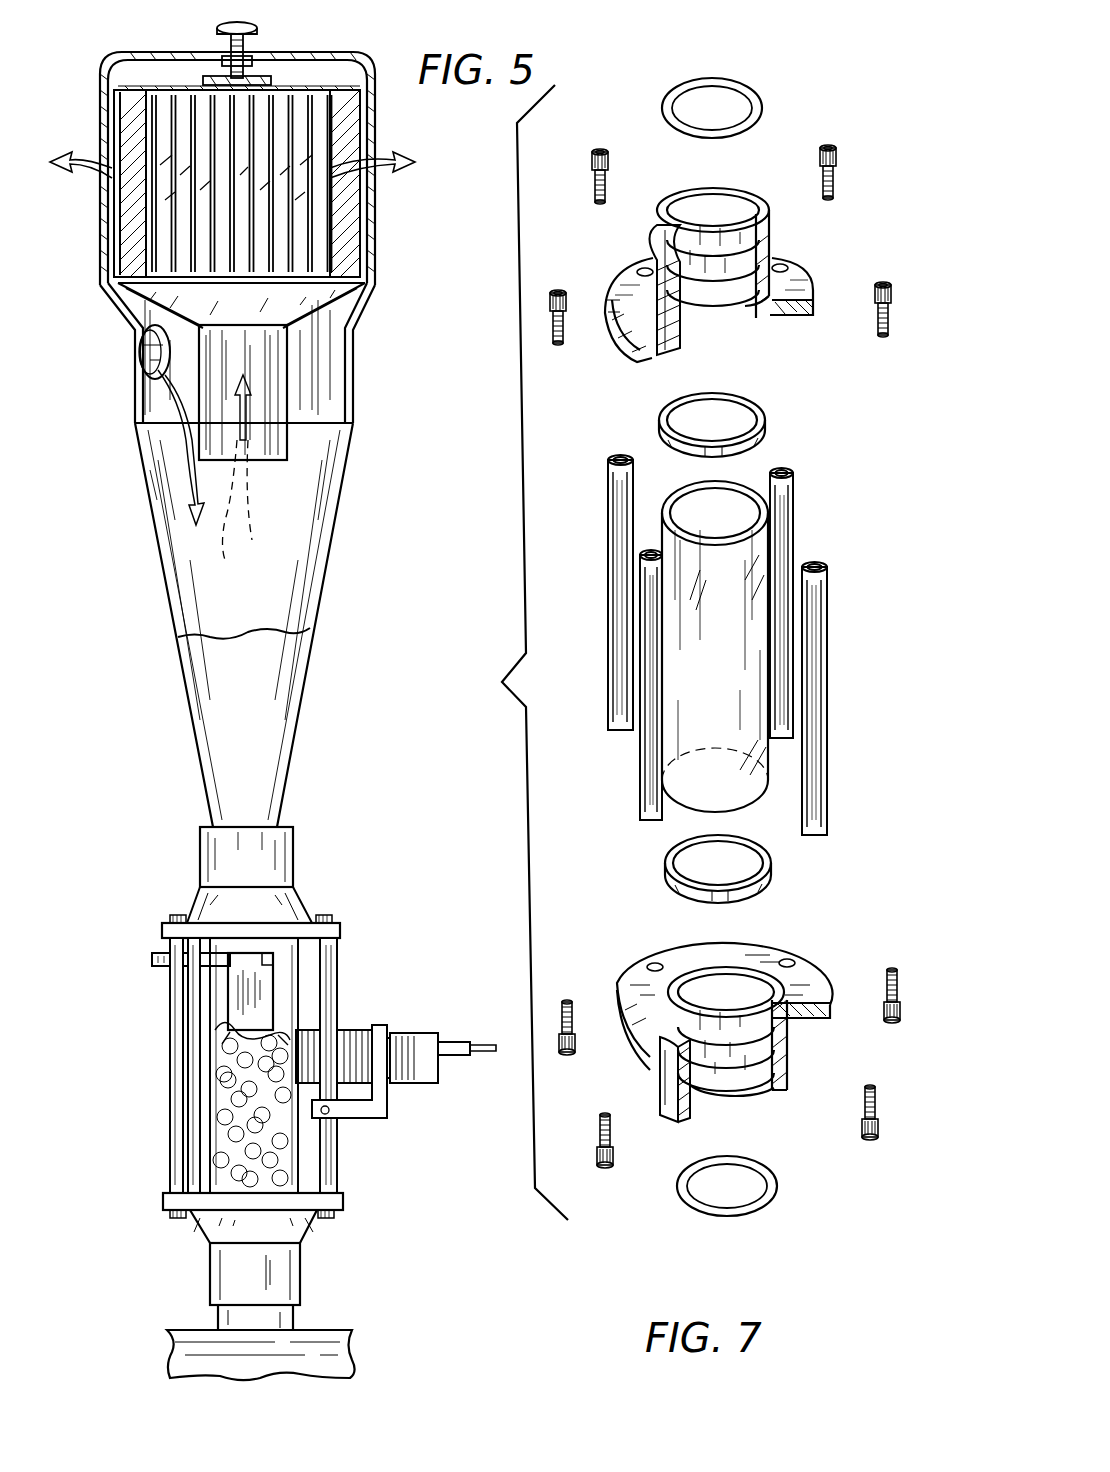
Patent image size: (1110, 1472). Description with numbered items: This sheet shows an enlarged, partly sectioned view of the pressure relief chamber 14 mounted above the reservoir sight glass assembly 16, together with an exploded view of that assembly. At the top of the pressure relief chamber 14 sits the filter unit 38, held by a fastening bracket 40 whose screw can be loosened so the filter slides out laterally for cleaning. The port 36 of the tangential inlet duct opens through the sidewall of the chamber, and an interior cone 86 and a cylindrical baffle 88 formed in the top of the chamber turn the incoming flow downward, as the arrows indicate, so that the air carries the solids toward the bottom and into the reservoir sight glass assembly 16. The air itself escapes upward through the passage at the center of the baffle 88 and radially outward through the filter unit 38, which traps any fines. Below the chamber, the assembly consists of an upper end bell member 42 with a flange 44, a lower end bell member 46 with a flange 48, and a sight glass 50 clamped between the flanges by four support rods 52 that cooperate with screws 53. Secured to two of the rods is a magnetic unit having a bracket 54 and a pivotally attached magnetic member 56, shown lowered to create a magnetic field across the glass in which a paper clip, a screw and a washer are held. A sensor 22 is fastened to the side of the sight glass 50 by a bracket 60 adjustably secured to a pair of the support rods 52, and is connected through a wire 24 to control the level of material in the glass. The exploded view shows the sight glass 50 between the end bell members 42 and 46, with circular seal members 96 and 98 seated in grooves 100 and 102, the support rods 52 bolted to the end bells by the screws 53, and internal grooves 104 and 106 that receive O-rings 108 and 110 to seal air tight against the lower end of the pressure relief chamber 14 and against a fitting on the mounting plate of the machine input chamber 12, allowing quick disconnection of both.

In FIG. 5, the machine input chamber 12 is at (190, 1330).
In FIG. 5, the pressure relief chamber 14 is at (366, 416).
In FIG. 5, the reservoir sight glass assembly 16 is at (319, 903).
In FIG. 5, the sensor 22 is at (360, 1028).
In FIG. 5, the wire 24 is at (463, 1043).
In FIG. 5, the port 36 is at (140, 358).
In FIG. 5, the filter unit 38 is at (360, 234).
In FIG. 5, the fastening bracket 40 is at (290, 52).
In FIG. 5, the upper end bell member 42 is at (293, 867).
In FIG. 7, the upper end bell member 42 is at (712, 198).
In FIG. 5, the flange 44 is at (340, 931).
In FIG. 5, the lower end bell member 46 is at (310, 1229).
In FIG. 7, the lower end bell member 46 is at (810, 978).
In FIG. 5, the flange 48 is at (344, 1198).
In FIG. 7, the sight glass 50 is at (750, 490).
In FIG. 5, the support rods 52 is at (170, 1083).
In FIG. 7, the support rods 52 is at (823, 595).
In FIG. 7, the screws 53 is at (817, 177).
In FIG. 5, the bracket 54 is at (162, 968).
In FIG. 5, the magnetic member 56 is at (265, 983).
In FIG. 5, the bracket 60 is at (387, 1111).
In FIG. 5, the interior cone 86 is at (190, 298).
In FIG. 5, the cylindrical baffle 88 is at (287, 442).
In FIG. 7, the circular seal member 96 is at (765, 422).
In FIG. 7, the circular seal member 98 is at (775, 864).
In FIG. 7, the groove 100 is at (762, 316).
In FIG. 7, the groove 102 is at (694, 978).
In FIG. 7, the internal groove 104 is at (661, 214).
In FIG. 7, the internal groove 106 is at (693, 1087).
In FIG. 7, the O-ring 108 is at (758, 92).
In FIG. 7, the O-ring 110 is at (777, 1183).